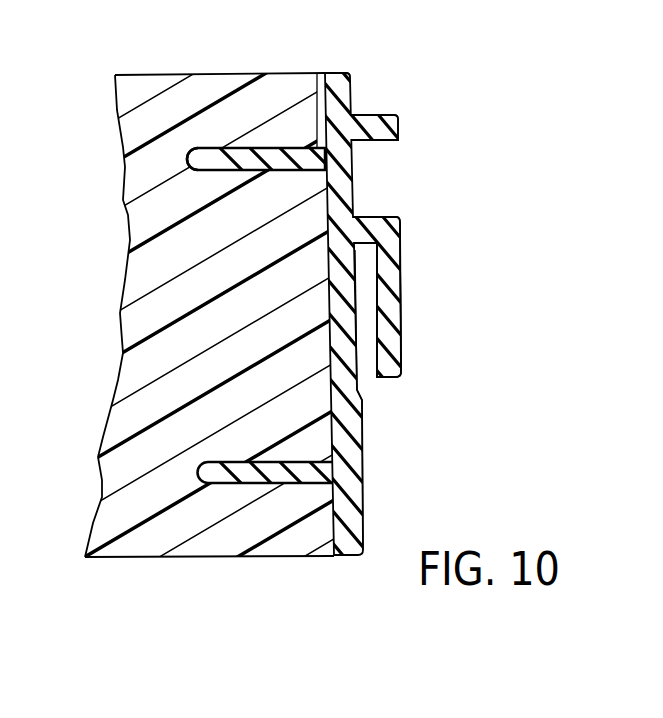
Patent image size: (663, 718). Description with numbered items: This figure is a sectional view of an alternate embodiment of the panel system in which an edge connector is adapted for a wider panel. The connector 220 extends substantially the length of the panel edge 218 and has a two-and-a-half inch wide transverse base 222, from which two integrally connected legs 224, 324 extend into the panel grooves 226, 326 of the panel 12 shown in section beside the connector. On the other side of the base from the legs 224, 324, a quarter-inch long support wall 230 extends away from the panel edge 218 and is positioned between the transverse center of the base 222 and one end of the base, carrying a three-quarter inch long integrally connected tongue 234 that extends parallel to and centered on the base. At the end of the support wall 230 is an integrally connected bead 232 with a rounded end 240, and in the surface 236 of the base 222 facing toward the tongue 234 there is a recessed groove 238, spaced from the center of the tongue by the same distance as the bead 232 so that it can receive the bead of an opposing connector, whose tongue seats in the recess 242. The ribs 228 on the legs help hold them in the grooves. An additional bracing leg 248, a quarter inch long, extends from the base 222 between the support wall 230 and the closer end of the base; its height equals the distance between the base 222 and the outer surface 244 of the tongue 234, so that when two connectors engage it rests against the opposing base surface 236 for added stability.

The wall 12 is at (138, 73).
The panel edge 218 is at (343, 76).
The connector 220 is at (381, 70).
The transverse base 222 is at (348, 556).
The leg 224 is at (320, 92).
The panel groove 226 is at (205, 147).
The anchor ribs 228 is at (297, 145).
The support wall 230 is at (368, 214).
The bead 232 is at (400, 221).
The tongue 234 is at (385, 307).
The surface of base 236 is at (362, 498).
The recessed groove 238 is at (353, 393).
The rounded end of clip leg 240 is at (394, 379).
The recess 242 is at (368, 353).
The outer surface of tongue 244 is at (399, 333).
The bracing leg 248 is at (388, 116).
The leg 324 is at (327, 485).
The panel groove 326 is at (208, 487).